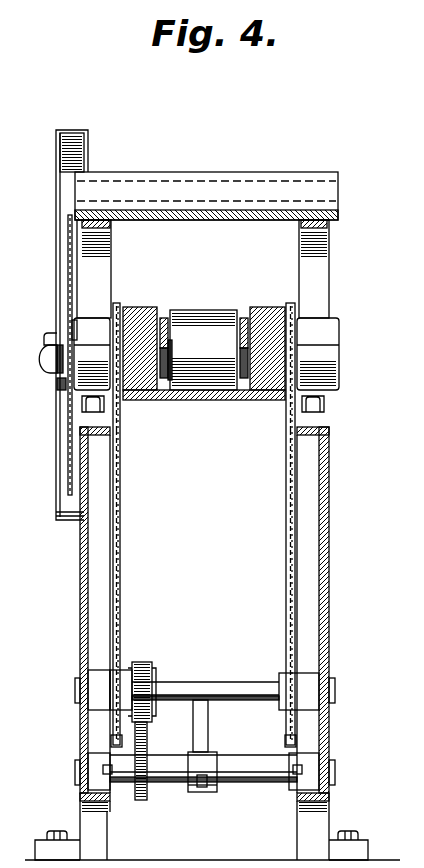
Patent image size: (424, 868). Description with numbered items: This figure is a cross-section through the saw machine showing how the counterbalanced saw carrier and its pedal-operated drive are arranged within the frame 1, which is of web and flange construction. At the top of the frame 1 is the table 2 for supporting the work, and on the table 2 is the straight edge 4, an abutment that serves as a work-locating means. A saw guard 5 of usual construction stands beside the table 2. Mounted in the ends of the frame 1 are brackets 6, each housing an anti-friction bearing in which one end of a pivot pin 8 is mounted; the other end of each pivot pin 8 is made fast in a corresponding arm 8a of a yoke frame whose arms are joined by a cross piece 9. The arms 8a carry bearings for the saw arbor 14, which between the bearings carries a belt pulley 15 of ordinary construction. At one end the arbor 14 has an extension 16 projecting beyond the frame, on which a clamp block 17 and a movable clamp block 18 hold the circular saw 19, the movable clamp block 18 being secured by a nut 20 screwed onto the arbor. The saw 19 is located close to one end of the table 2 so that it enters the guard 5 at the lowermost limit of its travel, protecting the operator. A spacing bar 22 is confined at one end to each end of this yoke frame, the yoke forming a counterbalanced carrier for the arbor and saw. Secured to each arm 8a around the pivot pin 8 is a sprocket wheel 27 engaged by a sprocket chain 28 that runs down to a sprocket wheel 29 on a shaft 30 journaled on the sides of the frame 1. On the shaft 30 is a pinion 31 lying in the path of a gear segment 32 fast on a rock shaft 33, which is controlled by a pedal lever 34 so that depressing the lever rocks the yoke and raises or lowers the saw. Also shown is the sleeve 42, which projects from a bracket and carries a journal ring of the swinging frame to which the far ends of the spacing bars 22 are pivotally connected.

The frame 1 is at (80, 564).
The table 2 is at (190, 221).
The straight edge 4 is at (178, 179).
The saw guard 5 is at (70, 130).
The bracket 6 is at (206, 365).
The pivot pin 8 is at (111, 346).
The arm or leg of yoke frame 8a is at (268, 300).
The cross piece 9 is at (207, 401).
The saw arbor 14 is at (172, 353).
The belt pulley 15 is at (210, 312).
The extension 16 is at (42, 357).
The clamp block 17 is at (72, 332).
The movable clamp block 18 is at (62, 389).
The circular saw 19 is at (68, 270).
The nut 20 is at (44, 340).
The spacing bar 22 is at (165, 318).
The sprocket wheel 27 is at (118, 302).
The sprocket chain 28 is at (121, 515).
The sprocket wheel 29 is at (112, 737).
The shaft 30 is at (245, 688).
The pinion 31 is at (148, 663).
The gear segment 32 is at (148, 740).
The rock shaft 33 is at (257, 778).
The pedal lever 34 is at (208, 720).
The sleeve 42 is at (12, 613).